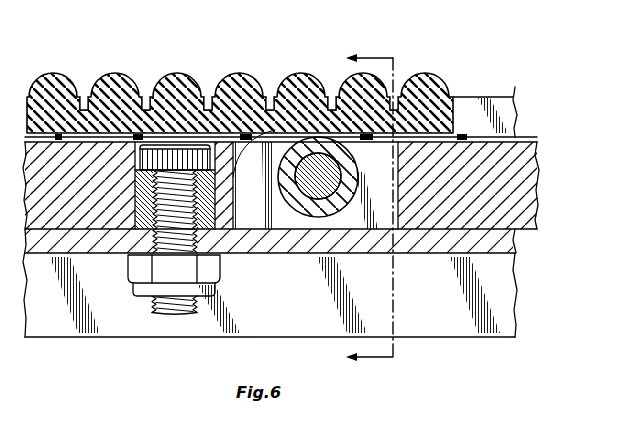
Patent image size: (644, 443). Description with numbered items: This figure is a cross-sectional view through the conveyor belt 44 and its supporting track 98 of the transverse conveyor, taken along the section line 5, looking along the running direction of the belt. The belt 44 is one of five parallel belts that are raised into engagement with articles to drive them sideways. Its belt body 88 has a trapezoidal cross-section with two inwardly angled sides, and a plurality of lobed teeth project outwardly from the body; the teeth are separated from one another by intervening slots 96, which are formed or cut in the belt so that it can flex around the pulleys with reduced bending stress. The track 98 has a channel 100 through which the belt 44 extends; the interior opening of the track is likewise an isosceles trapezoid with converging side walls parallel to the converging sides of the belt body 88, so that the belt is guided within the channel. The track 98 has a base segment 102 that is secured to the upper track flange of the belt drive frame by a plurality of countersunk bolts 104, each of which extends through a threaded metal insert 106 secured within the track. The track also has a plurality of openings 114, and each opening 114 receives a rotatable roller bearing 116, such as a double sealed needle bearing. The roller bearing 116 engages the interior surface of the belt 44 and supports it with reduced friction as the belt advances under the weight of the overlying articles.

The belt 44 is at (178, 74).
The slots 96 is at (87, 96).
The track 98 is at (24, 157).
The channel 100 is at (523, 137).
The base segment 102 is at (537, 198).
The countersunk bolts 104 is at (174, 314).
The threaded metal inserts 106 is at (231, 205).
The openings 114 is at (262, 146).
The roller bearing 116 is at (300, 214).
The belt body 88 is at (458, 122).
The section line 5- 5 is at (378, 208).